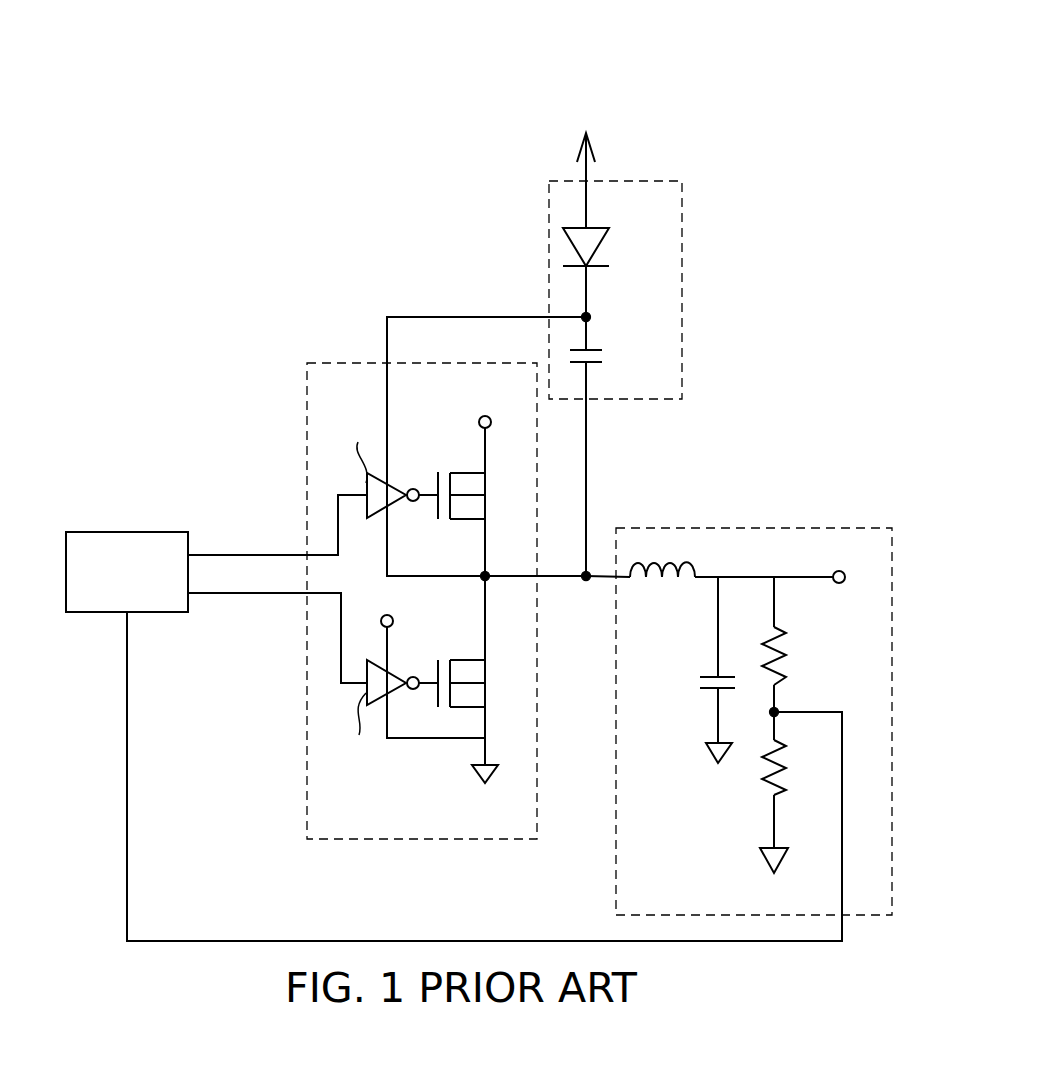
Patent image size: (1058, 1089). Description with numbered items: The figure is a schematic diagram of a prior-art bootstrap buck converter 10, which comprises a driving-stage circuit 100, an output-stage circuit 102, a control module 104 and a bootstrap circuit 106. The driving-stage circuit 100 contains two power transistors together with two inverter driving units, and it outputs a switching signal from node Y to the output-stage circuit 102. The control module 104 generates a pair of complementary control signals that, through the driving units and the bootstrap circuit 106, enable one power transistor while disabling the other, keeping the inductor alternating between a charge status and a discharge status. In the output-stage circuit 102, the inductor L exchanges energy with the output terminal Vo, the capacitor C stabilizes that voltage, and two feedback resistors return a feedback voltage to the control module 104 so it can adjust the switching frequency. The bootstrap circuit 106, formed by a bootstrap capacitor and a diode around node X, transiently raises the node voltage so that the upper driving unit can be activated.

The bootstrap buck converter 10 is at (728, 55).
The driving-stage circuit 100 is at (338, 362).
The output-stage circuit 102 is at (790, 528).
The control module 104 is at (122, 532).
The bootstrap circuit 106 is at (660, 181).